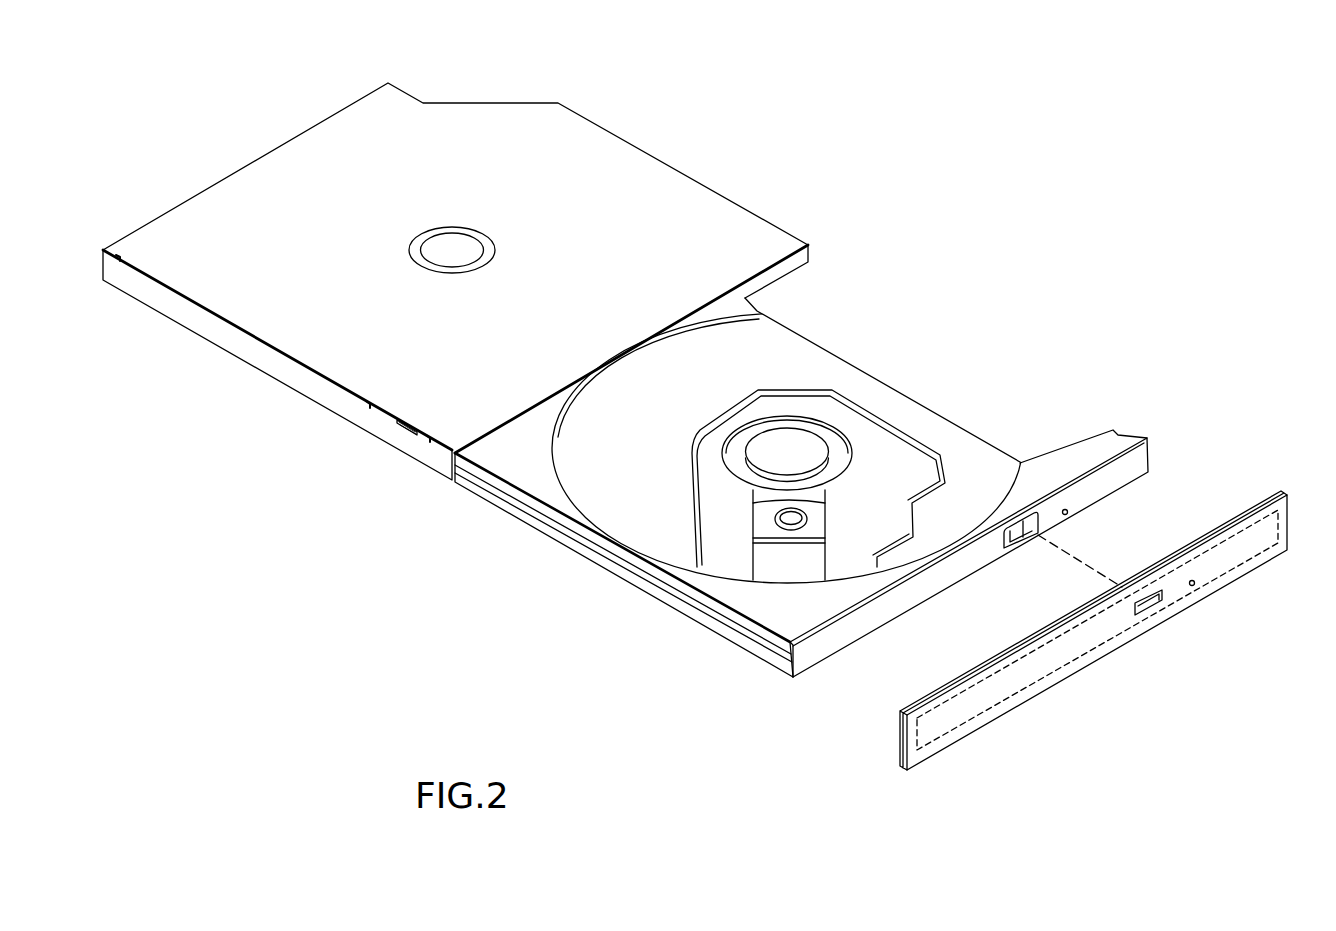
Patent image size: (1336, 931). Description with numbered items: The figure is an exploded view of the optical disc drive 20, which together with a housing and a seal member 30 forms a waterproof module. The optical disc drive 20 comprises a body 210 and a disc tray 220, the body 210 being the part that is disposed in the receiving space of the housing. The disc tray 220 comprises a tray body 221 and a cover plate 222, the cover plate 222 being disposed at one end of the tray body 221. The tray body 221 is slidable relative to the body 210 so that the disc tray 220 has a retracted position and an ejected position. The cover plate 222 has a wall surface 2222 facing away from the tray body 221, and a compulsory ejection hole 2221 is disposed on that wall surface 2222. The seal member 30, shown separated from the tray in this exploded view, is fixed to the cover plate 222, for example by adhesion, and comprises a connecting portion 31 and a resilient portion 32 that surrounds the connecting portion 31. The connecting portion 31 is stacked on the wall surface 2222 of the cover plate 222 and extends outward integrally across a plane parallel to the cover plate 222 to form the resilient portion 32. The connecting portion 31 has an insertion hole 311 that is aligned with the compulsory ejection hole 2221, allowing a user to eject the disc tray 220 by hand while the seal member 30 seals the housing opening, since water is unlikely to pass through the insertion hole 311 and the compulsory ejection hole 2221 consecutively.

The optical disc drive 20 is at (1138, 172).
The body 210 is at (707, 225).
The disc tray 220 is at (752, 725).
The tray body 221 is at (653, 515).
The cover plate 222 is at (958, 580).
The compulsory ejection hole 2221 is at (1075, 514).
The wall surface 2222 is at (841, 642).
The seal member 30 is at (1123, 718).
The connecting portion 31 is at (1103, 633).
The resilient portion 32 is at (1075, 667).
The insertion hole 311 is at (1203, 587).